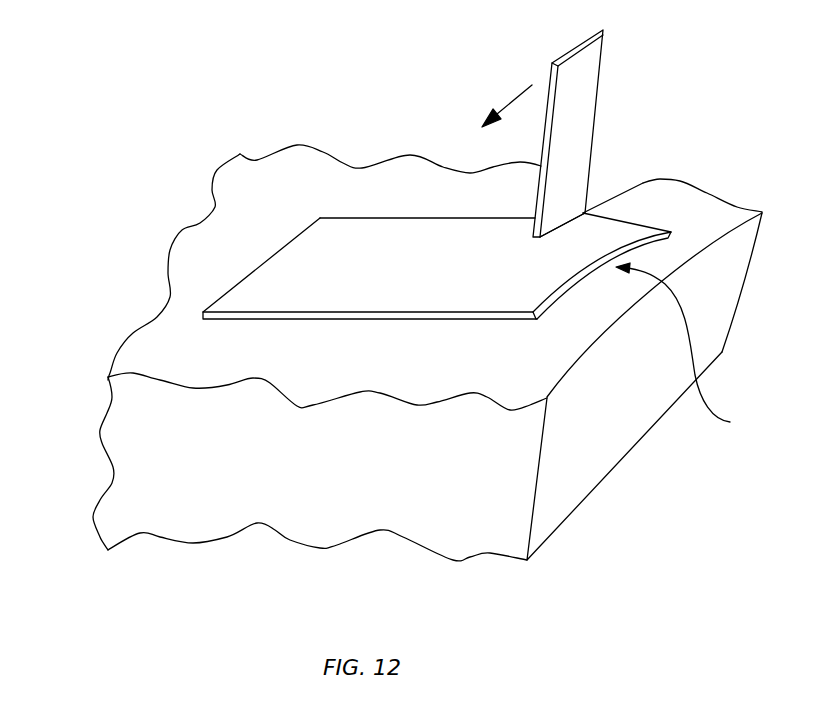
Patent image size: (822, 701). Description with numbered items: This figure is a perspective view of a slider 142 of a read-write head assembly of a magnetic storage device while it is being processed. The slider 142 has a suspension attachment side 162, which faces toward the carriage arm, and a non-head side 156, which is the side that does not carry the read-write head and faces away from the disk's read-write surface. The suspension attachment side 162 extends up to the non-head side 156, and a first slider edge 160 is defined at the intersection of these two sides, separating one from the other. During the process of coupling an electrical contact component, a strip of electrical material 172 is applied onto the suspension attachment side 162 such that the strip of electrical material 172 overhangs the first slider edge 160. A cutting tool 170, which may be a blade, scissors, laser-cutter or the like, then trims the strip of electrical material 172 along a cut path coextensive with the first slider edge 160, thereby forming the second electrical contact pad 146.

The slider 142 is at (137, 430).
The second electrical contact pad 146 is at (323, 255).
The non-head side 156 is at (600, 203).
The first slider edge 160 is at (603, 198).
The suspension attachment side 162 is at (400, 185).
The cutting tool 170 is at (580, 77).
The strip of electrical material 172 is at (691, 349).